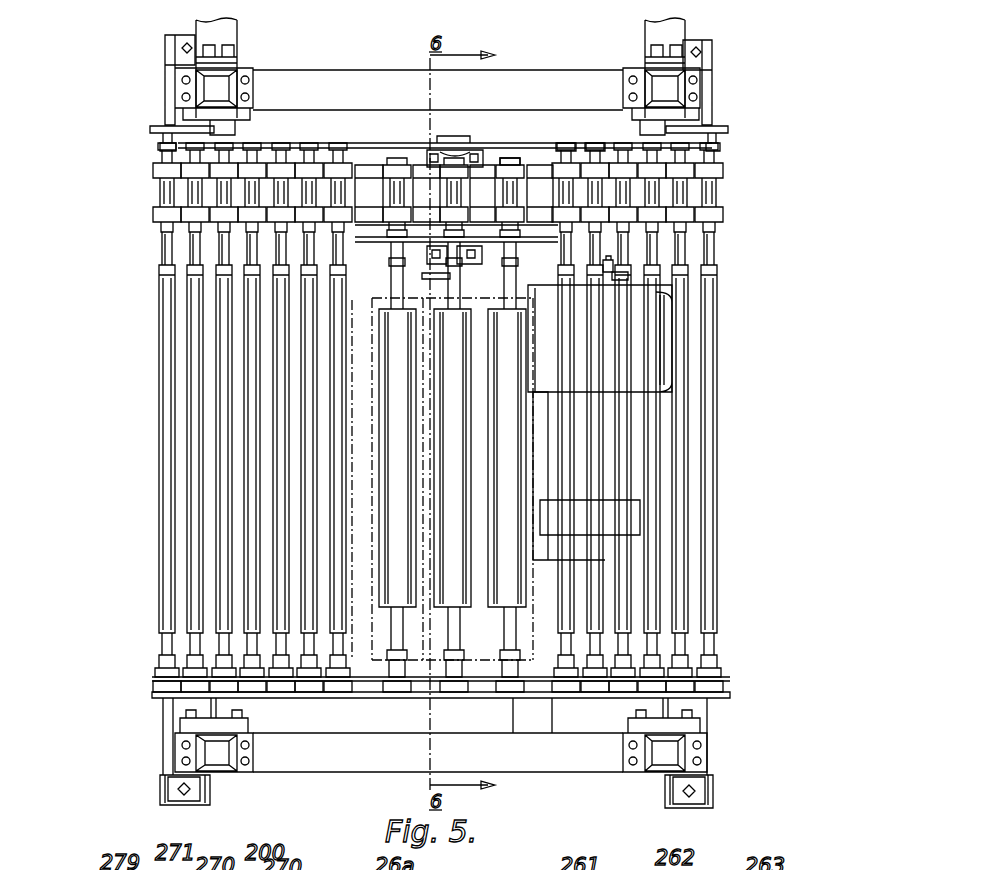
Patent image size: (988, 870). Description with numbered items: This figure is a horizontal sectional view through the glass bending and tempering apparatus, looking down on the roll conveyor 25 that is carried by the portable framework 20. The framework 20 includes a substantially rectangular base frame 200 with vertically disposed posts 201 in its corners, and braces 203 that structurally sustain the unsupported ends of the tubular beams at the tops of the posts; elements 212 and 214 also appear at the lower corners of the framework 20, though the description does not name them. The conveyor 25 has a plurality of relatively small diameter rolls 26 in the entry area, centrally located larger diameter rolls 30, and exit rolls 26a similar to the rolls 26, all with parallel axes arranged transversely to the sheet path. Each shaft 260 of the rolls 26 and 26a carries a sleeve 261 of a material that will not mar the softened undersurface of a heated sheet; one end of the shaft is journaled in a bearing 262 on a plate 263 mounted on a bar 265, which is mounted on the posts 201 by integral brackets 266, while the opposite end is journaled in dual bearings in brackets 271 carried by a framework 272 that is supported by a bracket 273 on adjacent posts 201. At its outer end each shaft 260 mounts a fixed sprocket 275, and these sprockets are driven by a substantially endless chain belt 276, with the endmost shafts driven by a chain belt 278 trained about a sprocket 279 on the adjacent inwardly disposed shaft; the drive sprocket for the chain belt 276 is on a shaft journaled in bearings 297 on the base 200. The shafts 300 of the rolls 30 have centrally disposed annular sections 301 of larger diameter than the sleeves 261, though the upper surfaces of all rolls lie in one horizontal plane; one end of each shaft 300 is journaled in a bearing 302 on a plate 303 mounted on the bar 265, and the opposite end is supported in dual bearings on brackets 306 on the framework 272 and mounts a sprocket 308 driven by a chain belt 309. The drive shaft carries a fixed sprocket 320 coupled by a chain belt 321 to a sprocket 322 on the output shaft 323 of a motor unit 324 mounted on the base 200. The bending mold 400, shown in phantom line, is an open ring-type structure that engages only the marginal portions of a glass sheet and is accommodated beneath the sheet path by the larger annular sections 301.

The portable framework 20 is at (150, 745).
The roll conveyor 25 is at (735, 540).
The rolls 26 is at (115, 417).
The rolls 26a is at (718, 410).
The rolls 30 is at (308, 467).
The base frame 200 is at (300, 780).
The posts 201 is at (224, 772).
The braces 203 is at (237, 30).
The foot 212 is at (697, 795).
The base pad 214 is at (713, 790).
The shaft 260 is at (160, 654).
The sleeve 261 is at (159, 596).
The bearing 262 is at (160, 672).
The plate 263 is at (168, 690).
The bar 265 is at (477, 688).
The brackets 266 is at (370, 692).
The brackets 271 is at (153, 195).
The framework 272 is at (367, 170).
The bracket 273 is at (232, 140).
The sprocket 275 is at (595, 143).
The chain belt 276 is at (410, 128).
The chain belt 278 is at (160, 127).
The sprocket 279 is at (165, 136).
The bearings 297 is at (405, 263).
The shafts 300 is at (403, 630).
The annular sections 301 is at (503, 600).
The bearing 302 is at (393, 700).
The plate 303 is at (457, 680).
The brackets 306 is at (509, 178).
The sprocket 308 is at (497, 240).
The chain belt 309 is at (440, 258).
The sprocket 320 is at (447, 282).
The chain belt 321 is at (531, 297).
The sprocket 322 is at (628, 273).
The output shaft 323 is at (612, 264).
The motor unit 324 is at (637, 333).
The bending mold 400 is at (355, 347).